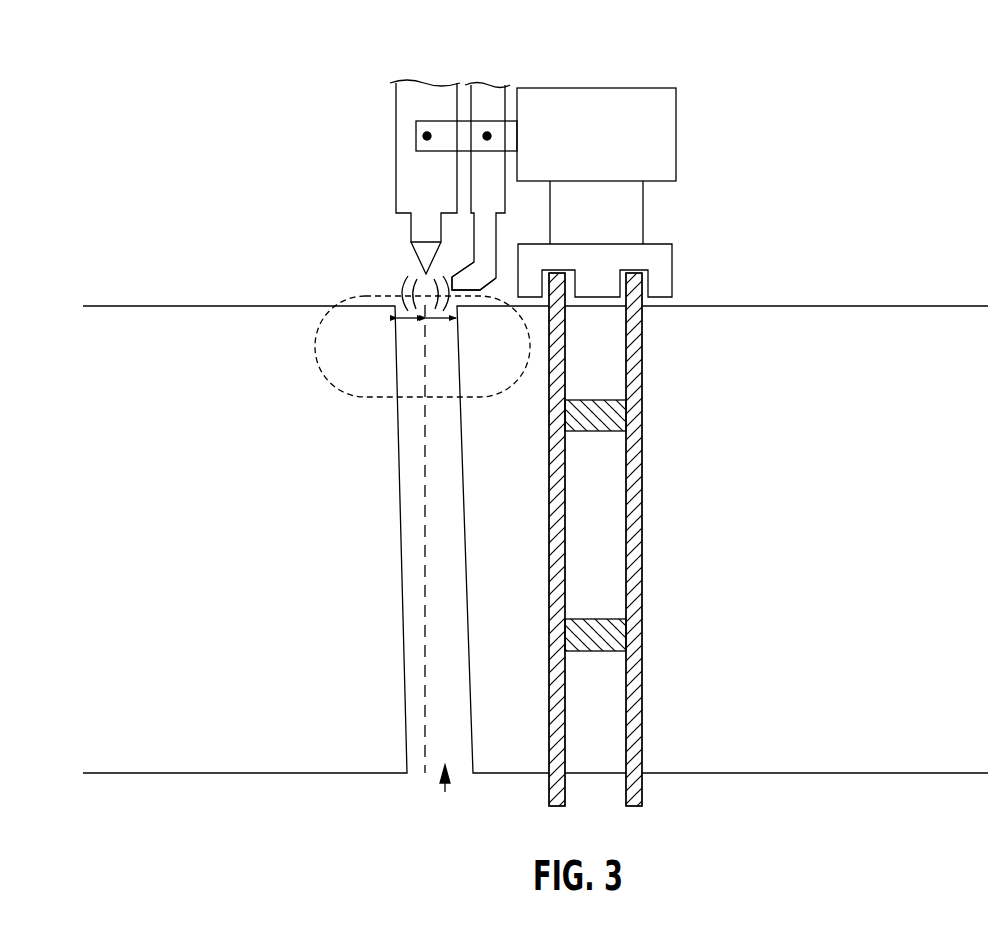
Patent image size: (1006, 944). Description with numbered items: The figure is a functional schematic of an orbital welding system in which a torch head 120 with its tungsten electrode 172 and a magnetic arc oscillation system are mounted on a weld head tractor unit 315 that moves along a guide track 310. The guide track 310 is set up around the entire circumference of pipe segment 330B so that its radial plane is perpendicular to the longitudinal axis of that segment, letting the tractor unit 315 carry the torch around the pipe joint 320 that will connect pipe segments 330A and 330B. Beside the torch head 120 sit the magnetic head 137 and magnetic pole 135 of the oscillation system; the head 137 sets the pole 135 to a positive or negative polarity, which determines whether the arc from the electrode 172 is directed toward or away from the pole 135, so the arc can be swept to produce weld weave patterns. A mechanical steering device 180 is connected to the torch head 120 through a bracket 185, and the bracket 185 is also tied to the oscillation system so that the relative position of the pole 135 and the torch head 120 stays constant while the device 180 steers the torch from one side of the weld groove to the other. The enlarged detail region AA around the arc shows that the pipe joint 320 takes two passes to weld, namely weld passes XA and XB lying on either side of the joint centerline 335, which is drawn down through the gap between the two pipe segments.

The torch head 120 is at (396, 108).
The magnetic head 137 is at (505, 86).
The magnetic pole 135 is at (497, 239).
The bracket 185 is at (447, 137).
The mechanical steering device 180 is at (676, 127).
The weld head tractor unit 315 is at (663, 244).
The guide track 310 is at (643, 527).
The tungsten electrode 172 is at (422, 258).
The pipe joint 320 is at (445, 795).
The centerline 335 is at (425, 773).
The pipe segment 330A is at (270, 773).
The pipe segment 330B is at (868, 773).
The detail region AA is at (323, 376).
The weld pass XA is at (410, 320).
The weld pass XB is at (440, 320).